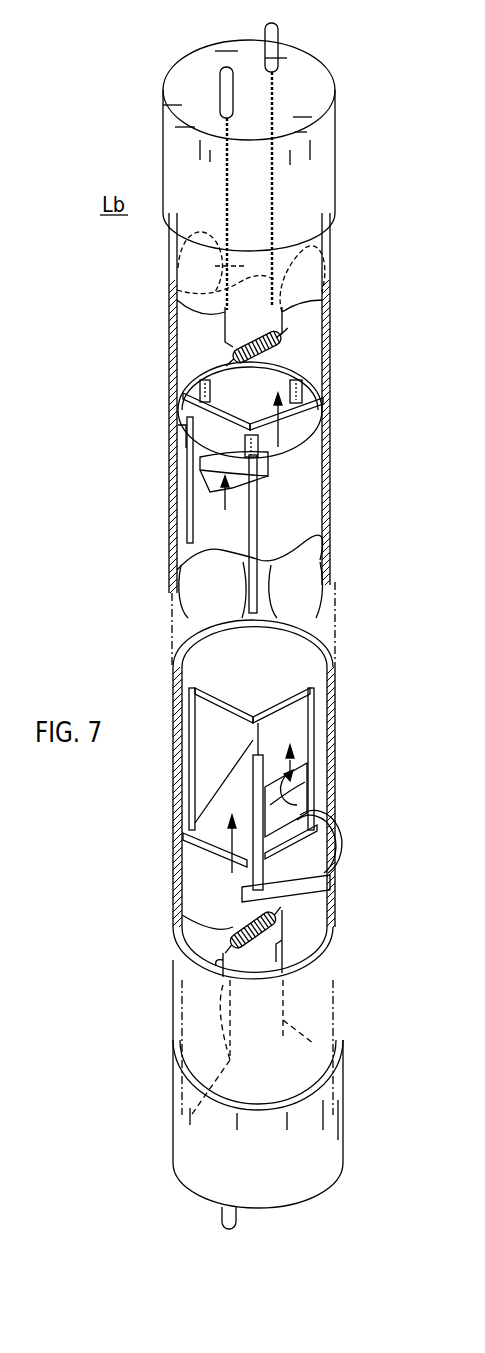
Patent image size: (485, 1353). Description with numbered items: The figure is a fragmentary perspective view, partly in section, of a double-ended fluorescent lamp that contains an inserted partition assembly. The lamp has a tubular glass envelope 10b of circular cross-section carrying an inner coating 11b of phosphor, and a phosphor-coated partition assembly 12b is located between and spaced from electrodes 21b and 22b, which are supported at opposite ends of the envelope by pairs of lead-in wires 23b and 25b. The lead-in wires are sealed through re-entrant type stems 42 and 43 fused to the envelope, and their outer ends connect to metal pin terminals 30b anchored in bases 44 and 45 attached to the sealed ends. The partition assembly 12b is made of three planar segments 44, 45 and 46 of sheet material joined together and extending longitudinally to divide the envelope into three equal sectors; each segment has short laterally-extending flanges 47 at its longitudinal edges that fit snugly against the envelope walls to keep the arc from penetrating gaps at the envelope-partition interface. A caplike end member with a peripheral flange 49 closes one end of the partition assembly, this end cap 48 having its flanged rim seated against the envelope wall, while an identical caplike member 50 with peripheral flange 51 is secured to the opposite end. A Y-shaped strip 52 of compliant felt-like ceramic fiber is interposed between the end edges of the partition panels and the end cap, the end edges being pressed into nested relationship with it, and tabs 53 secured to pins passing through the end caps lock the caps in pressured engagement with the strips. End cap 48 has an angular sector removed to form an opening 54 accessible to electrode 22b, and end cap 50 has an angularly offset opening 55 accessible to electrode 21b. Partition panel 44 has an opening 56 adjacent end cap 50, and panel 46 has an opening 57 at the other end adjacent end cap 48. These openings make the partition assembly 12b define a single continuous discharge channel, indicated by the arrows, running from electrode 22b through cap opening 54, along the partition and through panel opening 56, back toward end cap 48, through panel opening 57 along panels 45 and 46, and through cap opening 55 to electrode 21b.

The tubular glass envelope 10b is at (333, 597).
The inner coating 11b is at (268, 645).
The partition assembly 12b is at (240, 705).
The electrode 21b is at (287, 345).
The electrode 22b is at (233, 927).
The lead-in wires 23b is at (193, 315).
The lead-in wires 25b is at (285, 938).
The metal pin terminals 30b is at (265, 35).
The re-entrant type stem 42 is at (257, 1037).
The re-entrant type stem 43 is at (185, 250).
The base / planar partition segment 44 is at (210, 757).
The base / planar partition segment 45 is at (185, 175).
The planar partition segment 46 is at (290, 510).
The laterally-extending flanges 47 is at (190, 513).
The end cap 48 is at (305, 857).
The peripheral flange 49 is at (330, 900).
The caplike member 50 is at (305, 377).
The peripheral flange 51 is at (207, 462).
The Y-shaped strip 52 is at (302, 832).
The tabs 53 is at (198, 395).
The opening 54 is at (183, 862).
The opening 55 is at (295, 420).
The opening 56 is at (182, 432).
The opening 57 is at (305, 793).